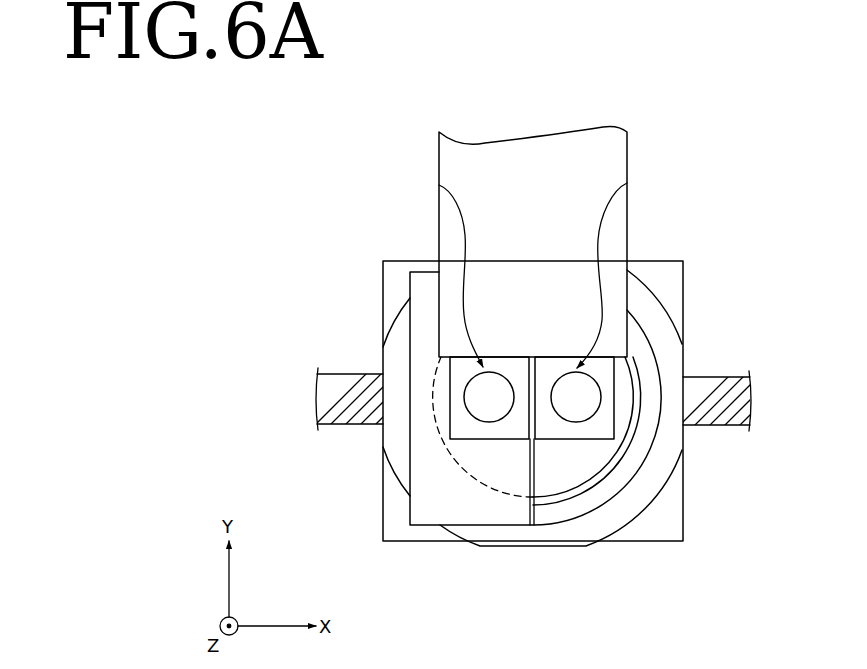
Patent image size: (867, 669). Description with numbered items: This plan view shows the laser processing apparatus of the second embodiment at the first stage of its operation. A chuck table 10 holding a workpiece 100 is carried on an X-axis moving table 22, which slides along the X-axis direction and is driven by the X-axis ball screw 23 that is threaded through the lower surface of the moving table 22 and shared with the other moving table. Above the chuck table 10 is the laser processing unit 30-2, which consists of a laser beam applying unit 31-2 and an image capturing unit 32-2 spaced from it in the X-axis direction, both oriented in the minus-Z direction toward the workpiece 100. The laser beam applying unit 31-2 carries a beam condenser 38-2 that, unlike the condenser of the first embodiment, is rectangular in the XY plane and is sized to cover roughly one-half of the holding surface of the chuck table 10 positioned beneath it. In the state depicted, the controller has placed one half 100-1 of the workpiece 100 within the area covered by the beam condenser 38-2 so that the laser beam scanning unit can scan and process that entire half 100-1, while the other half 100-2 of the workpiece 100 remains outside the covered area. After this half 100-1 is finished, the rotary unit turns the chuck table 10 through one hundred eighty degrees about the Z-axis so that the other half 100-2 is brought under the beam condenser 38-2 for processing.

The laser processing unit 30-2 is at (668, 124).
The laser beam applying unit 31-2 is at (439, 185).
The image capturing unit 32-2 is at (627, 183).
The beam condenser 38-2 is at (422, 280).
The X-axis ball screw 23 is at (727, 388).
The chuck table 10 is at (637, 452).
The X-axis moving table 22 is at (668, 541).
The workpiece 100 is at (568, 478).
The one half of the workpiece 100-1 is at (498, 472).
The other half of the workpiece 100-2 is at (548, 478).